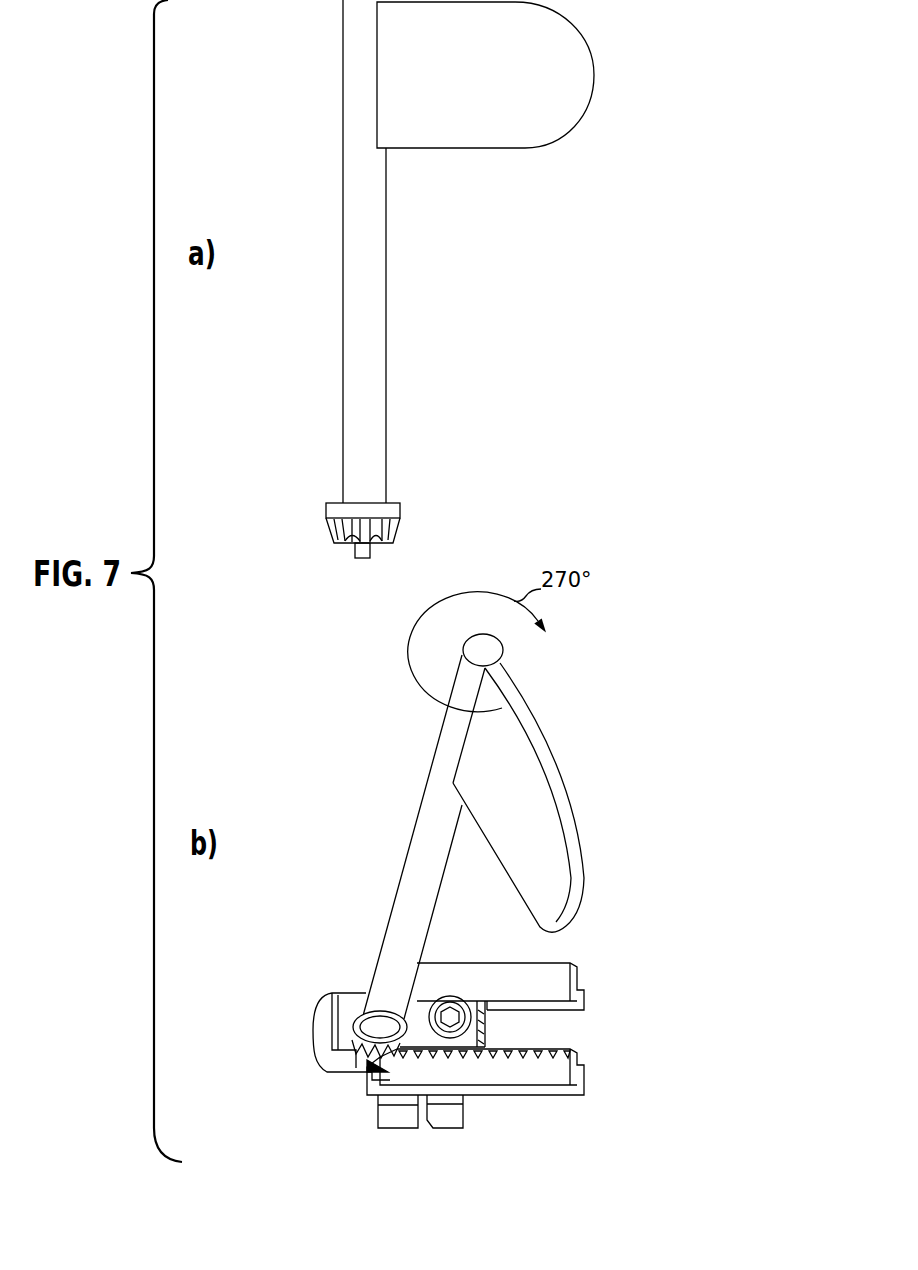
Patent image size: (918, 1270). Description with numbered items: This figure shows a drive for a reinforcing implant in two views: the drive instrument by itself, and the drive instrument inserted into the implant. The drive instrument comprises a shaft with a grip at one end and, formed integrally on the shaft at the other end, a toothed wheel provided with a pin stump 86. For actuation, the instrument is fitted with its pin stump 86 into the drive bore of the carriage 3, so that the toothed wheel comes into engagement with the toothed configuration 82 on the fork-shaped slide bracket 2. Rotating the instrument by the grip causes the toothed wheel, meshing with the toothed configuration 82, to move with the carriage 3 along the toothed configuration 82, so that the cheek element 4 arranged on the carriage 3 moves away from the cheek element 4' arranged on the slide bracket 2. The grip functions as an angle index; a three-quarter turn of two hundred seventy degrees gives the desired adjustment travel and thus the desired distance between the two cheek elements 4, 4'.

The pin stump 86 is at (361, 558).
The fork-shaped slide bracket 2 is at (552, 981).
The carriage 3 is at (323, 1028).
The toothed configuration 82 is at (517, 1055).
The cheek element 4 is at (445, 1133).
The cheek element 4' is at (398, 1133).